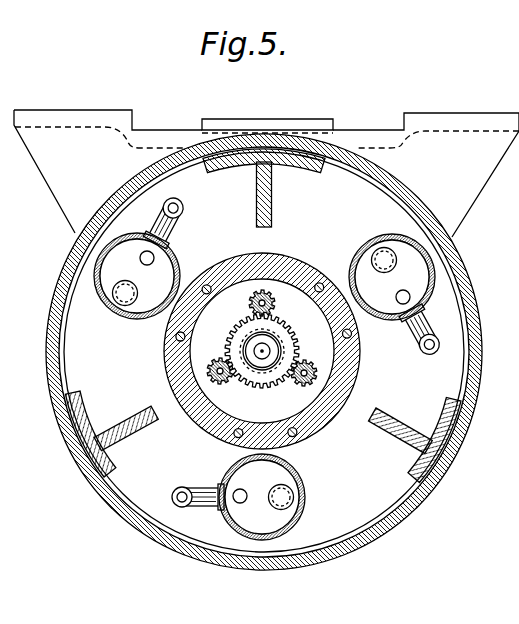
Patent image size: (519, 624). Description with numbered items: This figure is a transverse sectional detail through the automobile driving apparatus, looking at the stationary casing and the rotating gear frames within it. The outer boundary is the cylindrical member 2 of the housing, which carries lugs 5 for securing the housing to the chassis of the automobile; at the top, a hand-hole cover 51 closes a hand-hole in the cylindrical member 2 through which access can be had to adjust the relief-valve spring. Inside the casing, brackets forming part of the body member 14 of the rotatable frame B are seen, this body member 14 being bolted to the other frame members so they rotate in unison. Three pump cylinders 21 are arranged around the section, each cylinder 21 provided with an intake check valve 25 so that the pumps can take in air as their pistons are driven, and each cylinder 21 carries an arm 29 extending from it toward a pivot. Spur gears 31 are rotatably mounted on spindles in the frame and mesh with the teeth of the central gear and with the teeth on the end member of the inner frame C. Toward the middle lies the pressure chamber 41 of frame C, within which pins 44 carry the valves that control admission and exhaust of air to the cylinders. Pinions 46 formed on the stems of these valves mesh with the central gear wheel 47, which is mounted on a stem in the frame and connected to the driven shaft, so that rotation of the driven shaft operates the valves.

The lug 5 is at (76, 112).
The hand-hole cover 51 is at (268, 122).
The cylindrical member 2 is at (119, 188).
The body member 14 is at (298, 164).
The spur gear 31 is at (235, 259).
The pressure chamber 41 is at (194, 362).
The gear wheel 47 is at (300, 348).
The pin 44 is at (255, 307).
The pinion 46 is at (276, 301).
The pivot arm 29 is at (177, 205).
The pump cylinder 21 is at (365, 247).
The intake check valve 25 is at (385, 249).